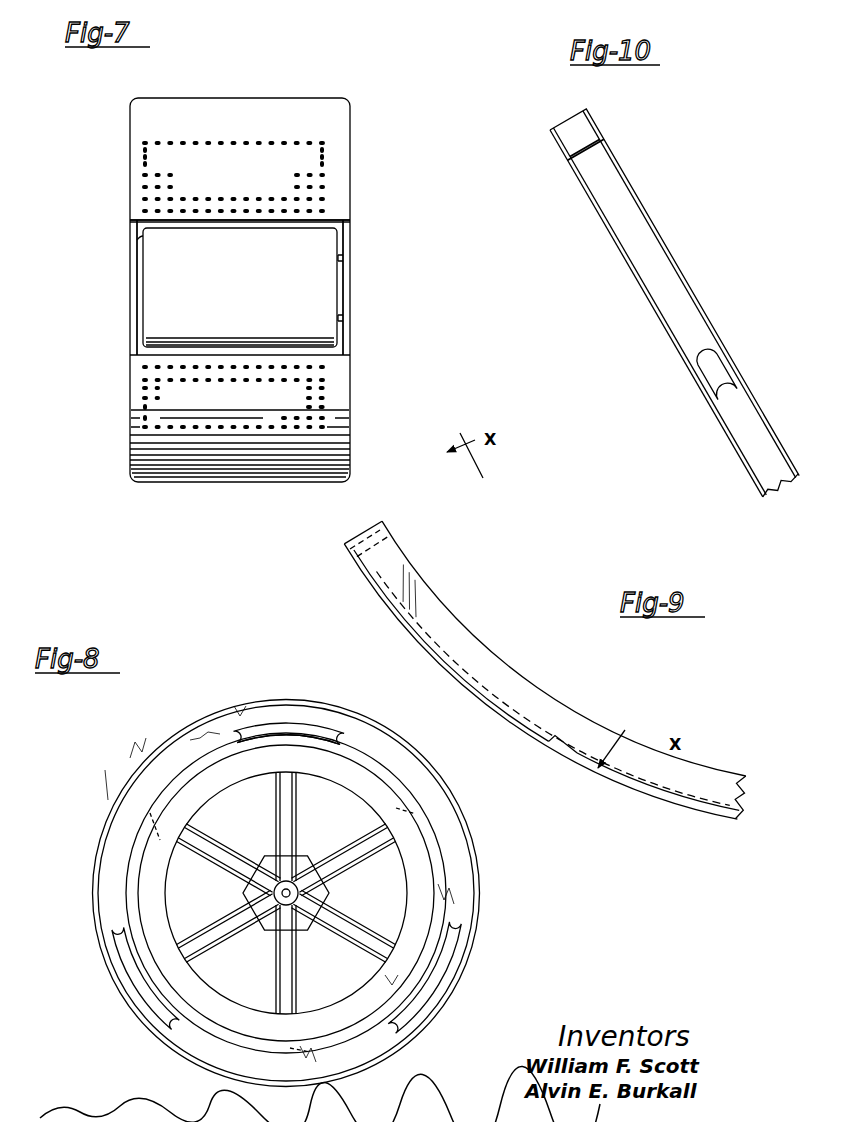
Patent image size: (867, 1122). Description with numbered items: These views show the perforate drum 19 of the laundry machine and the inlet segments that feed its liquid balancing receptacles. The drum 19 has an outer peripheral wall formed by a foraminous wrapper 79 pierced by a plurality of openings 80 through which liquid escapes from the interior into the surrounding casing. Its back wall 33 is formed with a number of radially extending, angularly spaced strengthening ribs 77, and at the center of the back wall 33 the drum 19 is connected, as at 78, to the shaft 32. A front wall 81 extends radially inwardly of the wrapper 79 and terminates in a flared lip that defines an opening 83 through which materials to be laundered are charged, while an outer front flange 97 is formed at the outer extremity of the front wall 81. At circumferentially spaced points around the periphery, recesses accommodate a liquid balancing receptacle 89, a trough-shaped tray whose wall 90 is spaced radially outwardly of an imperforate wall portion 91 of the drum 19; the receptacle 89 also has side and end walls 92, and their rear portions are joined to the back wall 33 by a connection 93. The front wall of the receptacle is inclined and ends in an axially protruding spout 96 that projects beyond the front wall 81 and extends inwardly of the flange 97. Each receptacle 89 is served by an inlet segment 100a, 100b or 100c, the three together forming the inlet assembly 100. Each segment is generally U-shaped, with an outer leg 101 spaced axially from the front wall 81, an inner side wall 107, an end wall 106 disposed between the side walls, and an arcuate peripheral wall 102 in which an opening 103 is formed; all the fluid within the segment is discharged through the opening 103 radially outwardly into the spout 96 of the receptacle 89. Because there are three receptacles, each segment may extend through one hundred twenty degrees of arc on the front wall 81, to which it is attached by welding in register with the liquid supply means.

In FIG. 7, the drum 19 is at (128, 312).
In FIG. 7, the foraminous wrapper 79 is at (245, 98).
In FIG. 7, the openings 80 is at (180, 143).
In FIG. 7, the liquid balancing receptacle 89 is at (318, 290).
In FIG. 7, the wall 90 is at (163, 250).
In FIG. 7, the imperforate wall portion 91 is at (322, 222).
In FIG. 7, the side and end walls 92 is at (345, 238).
In FIG. 7, the connection 93 is at (342, 259).
In FIG. 7, the spout 96 is at (140, 274).
In FIG. 8, the spout 96 is at (247, 727).
In FIG. 8, the shaft 32 is at (300, 893).
In FIG. 8, the back wall 33 is at (207, 897).
In FIG. 8, the strengthening ribs 77 is at (346, 853).
In FIG. 8, the connection 78 is at (272, 868).
In FIG. 8, the front wall 81 is at (430, 1007).
In FIG. 8, the opening 83 is at (396, 858).
In FIG. 8, the outer front flange 97 is at (333, 706).
In FIG. 9, the inlet assembly 100 is at (612, 800).
In FIG. 8, the inlet assembly 100 is at (452, 876).
In FIG. 8, the inlet segment 100a is at (436, 922).
In FIG. 8, the inlet segment 100b is at (172, 998).
In FIG. 8, the inlet segment 100c is at (272, 741).
In FIG. 10, the outer leg 101 is at (622, 255).
In FIG. 9, the outer leg 101 is at (535, 700).
In FIG. 10, the arcuate peripheral wall 102 is at (638, 232).
In FIG. 10, the opening 103 is at (718, 368).
In FIG. 9, the opening 103 is at (542, 748).
In FIG. 10, the end wall 106 is at (590, 138).
In FIG. 9, the end wall 106 is at (398, 543).
In FIG. 8, the end wall 106 is at (150, 813).
In FIG. 10, the inner side wall 107 is at (625, 172).